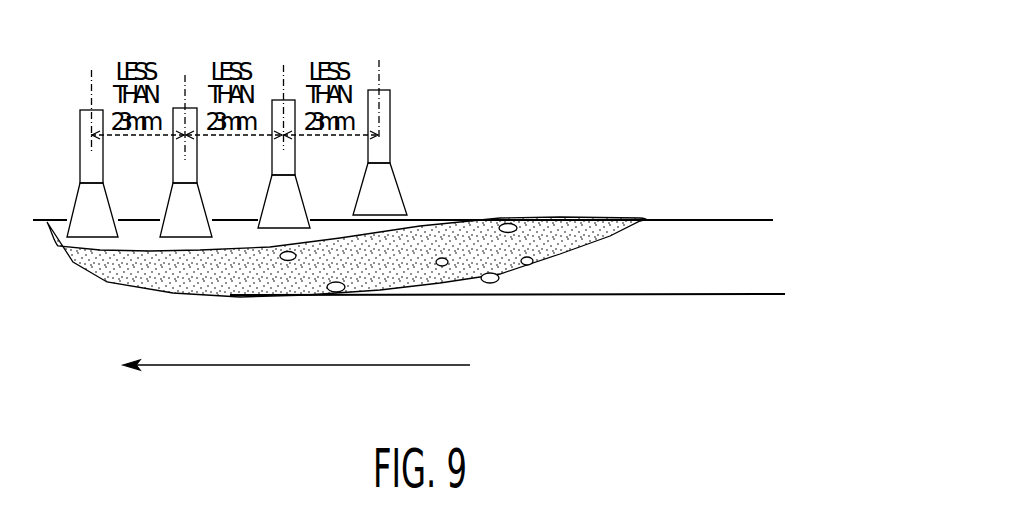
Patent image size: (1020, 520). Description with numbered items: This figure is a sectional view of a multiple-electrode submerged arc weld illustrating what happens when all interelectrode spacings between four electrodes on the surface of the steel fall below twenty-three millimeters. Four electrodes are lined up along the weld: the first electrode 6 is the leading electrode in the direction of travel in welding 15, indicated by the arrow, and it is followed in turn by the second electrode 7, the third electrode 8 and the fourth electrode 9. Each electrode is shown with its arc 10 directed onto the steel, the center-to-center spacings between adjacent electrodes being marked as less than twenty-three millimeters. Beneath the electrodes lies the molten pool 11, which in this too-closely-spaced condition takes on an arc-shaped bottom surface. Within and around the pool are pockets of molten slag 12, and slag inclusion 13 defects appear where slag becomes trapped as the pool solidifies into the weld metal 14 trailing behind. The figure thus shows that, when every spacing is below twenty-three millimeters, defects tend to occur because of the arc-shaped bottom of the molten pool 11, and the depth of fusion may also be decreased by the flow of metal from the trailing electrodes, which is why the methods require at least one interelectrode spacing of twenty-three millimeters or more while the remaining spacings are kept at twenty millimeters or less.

The first electrode 6 is at (84, 108).
The second electrode 7 is at (186, 107).
The third electrode 8 is at (283, 99).
The fourth electrode 9 is at (391, 107).
The arc 10 is at (92, 207).
The molten pool 11 is at (605, 216).
The molten slag 12 is at (445, 258).
The slag inclusion 13 is at (527, 265).
The weld metal 14 is at (667, 283).
The direction of travel in welding 15 is at (222, 368).